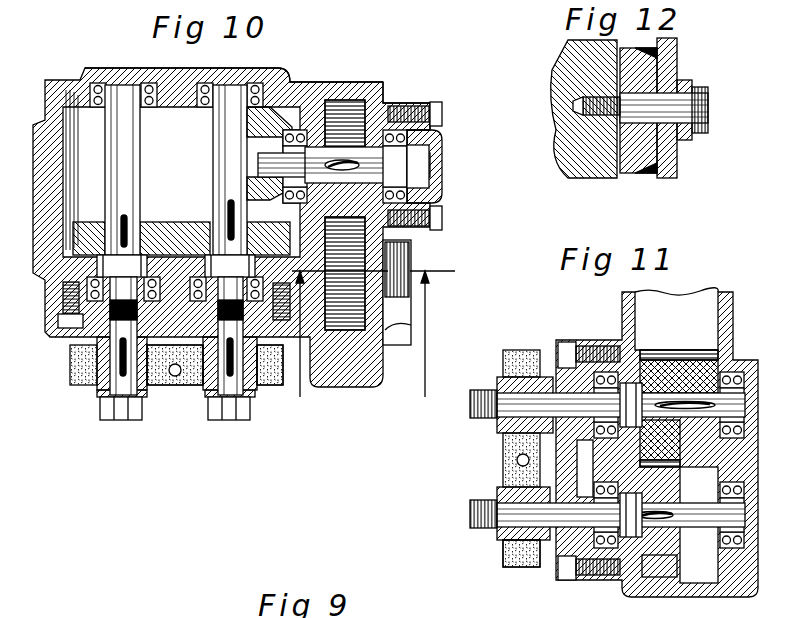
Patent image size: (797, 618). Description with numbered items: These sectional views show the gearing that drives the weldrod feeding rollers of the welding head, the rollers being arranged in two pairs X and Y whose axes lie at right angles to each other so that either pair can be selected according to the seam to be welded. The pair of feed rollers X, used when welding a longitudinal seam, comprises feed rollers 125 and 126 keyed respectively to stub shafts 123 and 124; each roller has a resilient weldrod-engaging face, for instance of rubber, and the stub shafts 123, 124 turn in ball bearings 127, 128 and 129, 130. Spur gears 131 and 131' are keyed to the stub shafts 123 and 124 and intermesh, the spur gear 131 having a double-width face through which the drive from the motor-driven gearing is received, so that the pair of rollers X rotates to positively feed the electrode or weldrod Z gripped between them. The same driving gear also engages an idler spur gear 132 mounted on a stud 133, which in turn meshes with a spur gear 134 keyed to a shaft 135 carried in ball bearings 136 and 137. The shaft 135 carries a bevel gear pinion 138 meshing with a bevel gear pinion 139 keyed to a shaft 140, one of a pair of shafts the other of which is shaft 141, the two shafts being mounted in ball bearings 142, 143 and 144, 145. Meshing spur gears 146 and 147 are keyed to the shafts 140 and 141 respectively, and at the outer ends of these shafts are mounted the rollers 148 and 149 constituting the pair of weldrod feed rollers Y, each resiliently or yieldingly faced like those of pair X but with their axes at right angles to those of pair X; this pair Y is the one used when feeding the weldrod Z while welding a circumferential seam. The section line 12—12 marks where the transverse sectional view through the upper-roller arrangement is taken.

In FIG. 10, the section line 12 is at (372, 351).
In FIG. 11, the stub shaft 123 is at (642, 392).
In FIG. 11, the stub shaft 124 is at (628, 510).
In FIG. 11, the feed roller 125 is at (500, 435).
In FIG. 11, the feed roller 126 is at (500, 537).
In FIG. 11, the ball bearing 127 is at (613, 377).
In FIG. 11, the ball bearing 128 is at (737, 377).
In FIG. 11, the ball bearing 129 is at (620, 573).
In FIG. 11, the ball bearing 130 is at (727, 553).
In FIG. 11, the spur gear 131 is at (692, 323).
In FIG. 11, the spur gear 131' is at (678, 586).
In FIG. 10, the idler spur gear 132 is at (358, 264).
In FIG. 12, the idler spur gear 132 is at (642, 73).
In FIG. 12, the stud 133 is at (708, 108).
In FIG. 10, the spur gear 134 is at (377, 86).
In FIG. 10, the shaft 135 is at (395, 117).
In FIG. 10, the ball bearing 136 is at (407, 140).
In FIG. 10, the ball bearing 137 is at (265, 185).
In FIG. 10, the bevel gear pinion 138 is at (343, 127).
In FIG. 10, the bevel gear pinion 139 is at (318, 78).
In FIG. 10, the shaft 140 is at (217, 161).
In FIG. 10, the shaft 141 is at (127, 144).
In FIG. 10, the ball bearing 142 is at (255, 76).
In FIG. 10, the ball bearing 143 is at (273, 330).
In FIG. 10, the ball bearing 144 is at (120, 88).
In FIG. 10, the ball bearing 145 is at (95, 302).
In FIG. 10, the spur gear 146 is at (197, 224).
In FIG. 10, the spur gear 147 is at (85, 222).
In FIG. 10, the roller 148 is at (80, 390).
In FIG. 10, the roller 149 is at (190, 394).
In FIG. 11, the pair of feed rollers X is at (520, 570).
In FIG. 10, the pair of feed rollers Y is at (260, 392).
In FIG. 10, the weldrod Z is at (173, 390).
In FIG. 11, the weldrod Z is at (520, 462).